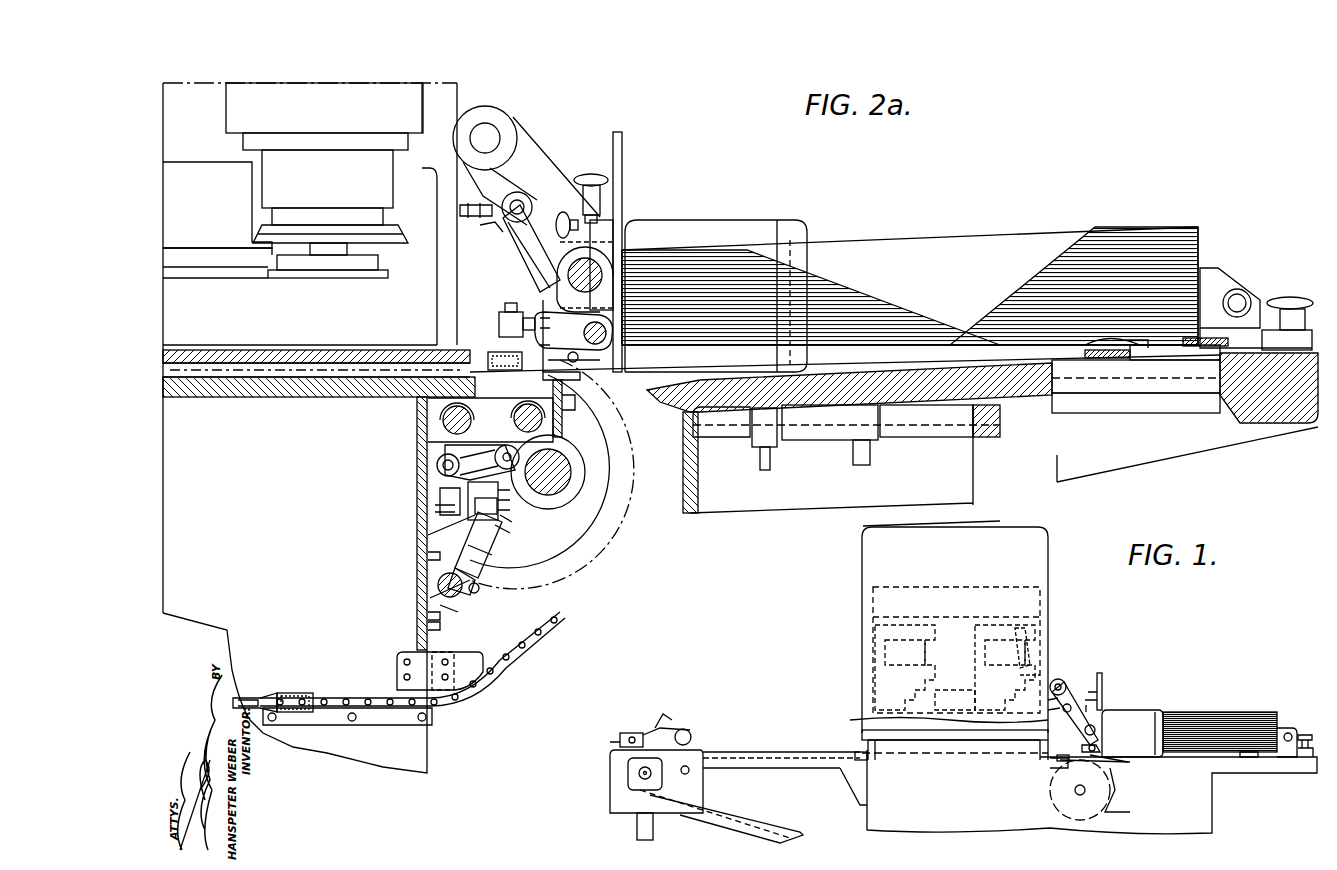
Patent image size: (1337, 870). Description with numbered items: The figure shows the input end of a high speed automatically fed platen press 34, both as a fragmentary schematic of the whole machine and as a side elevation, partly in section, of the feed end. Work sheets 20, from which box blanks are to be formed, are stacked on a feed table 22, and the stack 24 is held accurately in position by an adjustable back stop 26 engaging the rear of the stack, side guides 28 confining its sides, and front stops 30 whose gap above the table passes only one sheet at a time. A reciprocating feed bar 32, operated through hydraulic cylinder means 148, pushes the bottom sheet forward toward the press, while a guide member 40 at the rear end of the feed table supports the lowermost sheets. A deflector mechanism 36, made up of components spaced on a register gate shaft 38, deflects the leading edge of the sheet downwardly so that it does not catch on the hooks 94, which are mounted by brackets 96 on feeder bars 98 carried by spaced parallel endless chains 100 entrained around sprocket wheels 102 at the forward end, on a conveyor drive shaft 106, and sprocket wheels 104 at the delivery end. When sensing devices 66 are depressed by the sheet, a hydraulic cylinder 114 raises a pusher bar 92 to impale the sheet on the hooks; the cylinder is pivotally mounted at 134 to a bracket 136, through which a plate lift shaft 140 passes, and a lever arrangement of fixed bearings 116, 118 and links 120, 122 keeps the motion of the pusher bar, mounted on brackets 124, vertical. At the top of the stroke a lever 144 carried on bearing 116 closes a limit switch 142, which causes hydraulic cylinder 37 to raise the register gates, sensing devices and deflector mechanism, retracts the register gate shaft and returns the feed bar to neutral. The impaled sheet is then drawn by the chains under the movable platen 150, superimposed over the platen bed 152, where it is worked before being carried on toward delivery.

In FIG. 2A, the work sheets 20 is at (345, 380).
In FIG. 2A, the feed table 22 is at (1270, 428).
In FIG. 2A, the stack 24 is at (922, 298).
In FIG. 1, the stack 24 is at (1232, 712).
In FIG. 2A, the back stop 26 is at (1232, 280).
In FIG. 1, the back stop 26 is at (1282, 728).
In FIG. 2A, the side guides 28 is at (713, 224).
In FIG. 1, the side guides 28 is at (1146, 712).
In FIG. 2A, the front stops 30 is at (618, 140).
In FIG. 1, the front stops 30 is at (1104, 683).
In FIG. 2A, the feed bar 32 is at (1110, 365).
In FIG. 1, the feed bar 32 is at (1250, 760).
In FIG. 2A, the platen press 34 is at (202, 122).
In FIG. 1, the platen press 34 is at (969, 584).
In FIG. 2A, the deflector mechanism 36 is at (570, 404).
In FIG. 2A, the hydraulic cylinder 37 is at (522, 252).
In FIG. 1, the hydraulic cylinder 37 is at (1073, 695).
In FIG. 2A, the register gate shaft 38 is at (590, 362).
In FIG. 1, the register gate shaft 38 is at (1098, 745).
In FIG. 2A, the guide member 40 is at (565, 428).
In FIG. 1, the guide member 40 is at (1115, 764).
In FIG. 2A, the sensing devices 66 is at (528, 310).
In FIG. 2A, the pusher bar 92 is at (575, 440).
In FIG. 2A, the hooks 94 is at (250, 696).
In FIG. 2A, the brackets 96 is at (296, 692).
In FIG. 2A, the feeder bars 98 is at (493, 352).
In FIG. 1, the feeder bars 98 is at (858, 752).
In FIG. 2A, the endless chains 100 is at (495, 668).
In FIG. 1, the endless chains 100 is at (775, 757).
In FIG. 2A, the sprocket wheels 102 is at (645, 525).
In FIG. 1, the sprocket wheels 102 is at (1110, 790).
In FIG. 1, the sprocket wheels 104 is at (626, 773).
In FIG. 2A, the conveyor drive shaft 106 is at (565, 488).
In FIG. 2A, the hydraulic cylinder 114 is at (498, 542).
In FIG. 2A, the fixed bearing 116 is at (445, 466).
In FIG. 2A, the fixed bearing 118 is at (442, 416).
In FIG. 2A, the link 120 is at (440, 452).
In FIG. 2A, the link 122 is at (492, 417).
In FIG. 2A, the brackets 124 is at (578, 460).
In FIG. 2A, the pivot 134 is at (478, 590).
In FIG. 2A, the bracket 136 is at (460, 605).
In FIG. 2A, the plate lift shaft 140 is at (440, 585).
In FIG. 2A, the limit switch 142 is at (505, 512).
In FIG. 2A, the lever 144 is at (440, 498).
In FIG. 2A, the hydraulic cylinder means 148 is at (795, 435).
In FIG. 2A, the movable platen 150 is at (190, 282).
In FIG. 1, the movable platen 150 is at (862, 730).
In FIG. 2A, the platen bed 152 is at (265, 397).
In FIG. 1, the platen bed 152 is at (940, 815).